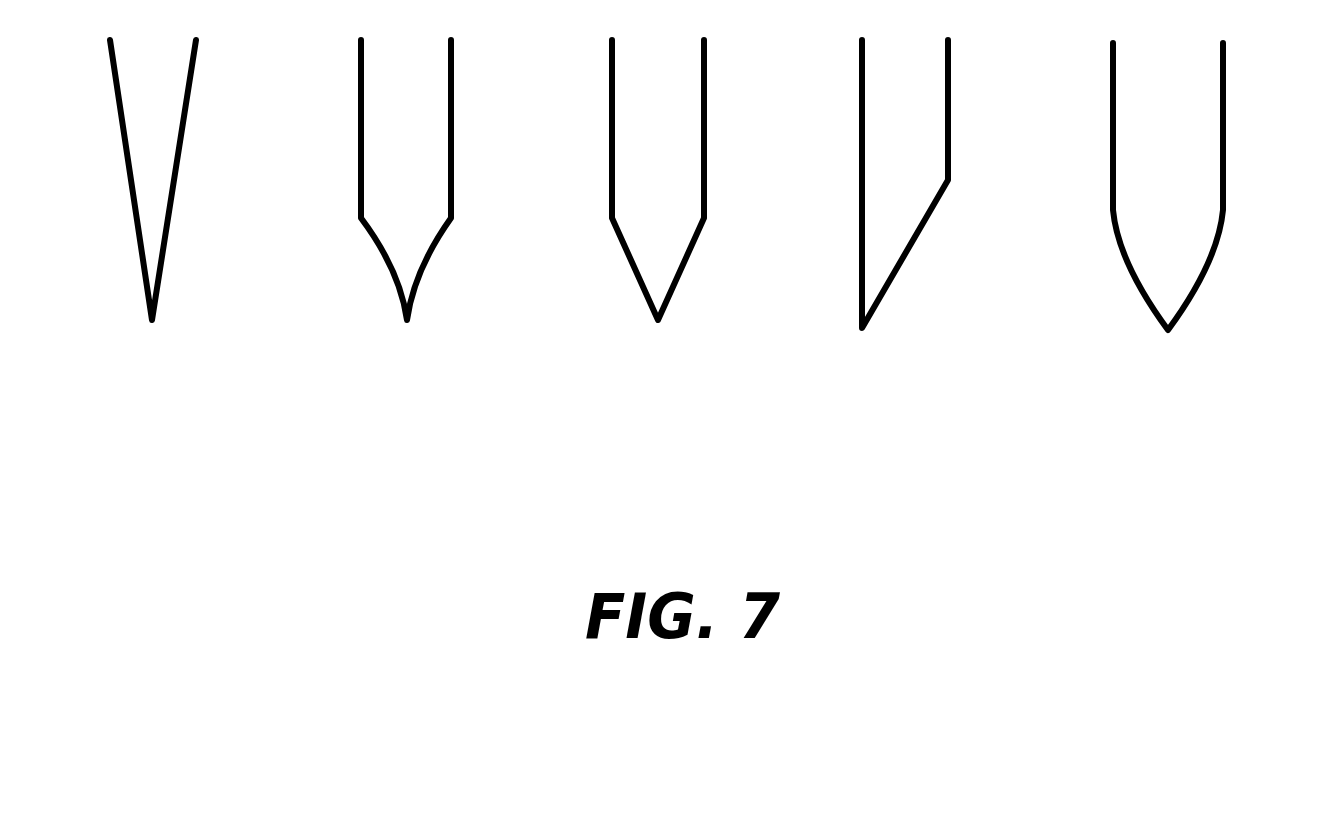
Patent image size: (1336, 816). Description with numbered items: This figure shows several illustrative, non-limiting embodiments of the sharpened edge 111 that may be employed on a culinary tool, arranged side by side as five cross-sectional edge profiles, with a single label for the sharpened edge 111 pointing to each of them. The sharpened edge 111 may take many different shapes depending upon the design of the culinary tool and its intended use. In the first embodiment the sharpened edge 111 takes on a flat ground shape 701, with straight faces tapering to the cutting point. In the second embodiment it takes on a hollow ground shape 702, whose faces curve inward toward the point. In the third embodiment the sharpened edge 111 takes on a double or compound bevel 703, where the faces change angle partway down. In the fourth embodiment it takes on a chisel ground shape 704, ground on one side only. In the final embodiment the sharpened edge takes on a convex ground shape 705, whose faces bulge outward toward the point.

The sharpened edge 111 is at (1168, 343).
The flat ground shape 701 is at (162, 320).
The hollow ground shape 702 is at (415, 320).
The double or compound bevel 703 is at (673, 321).
The chisel ground shape 704 is at (873, 328).
The convex ground shape 705 is at (1188, 328).